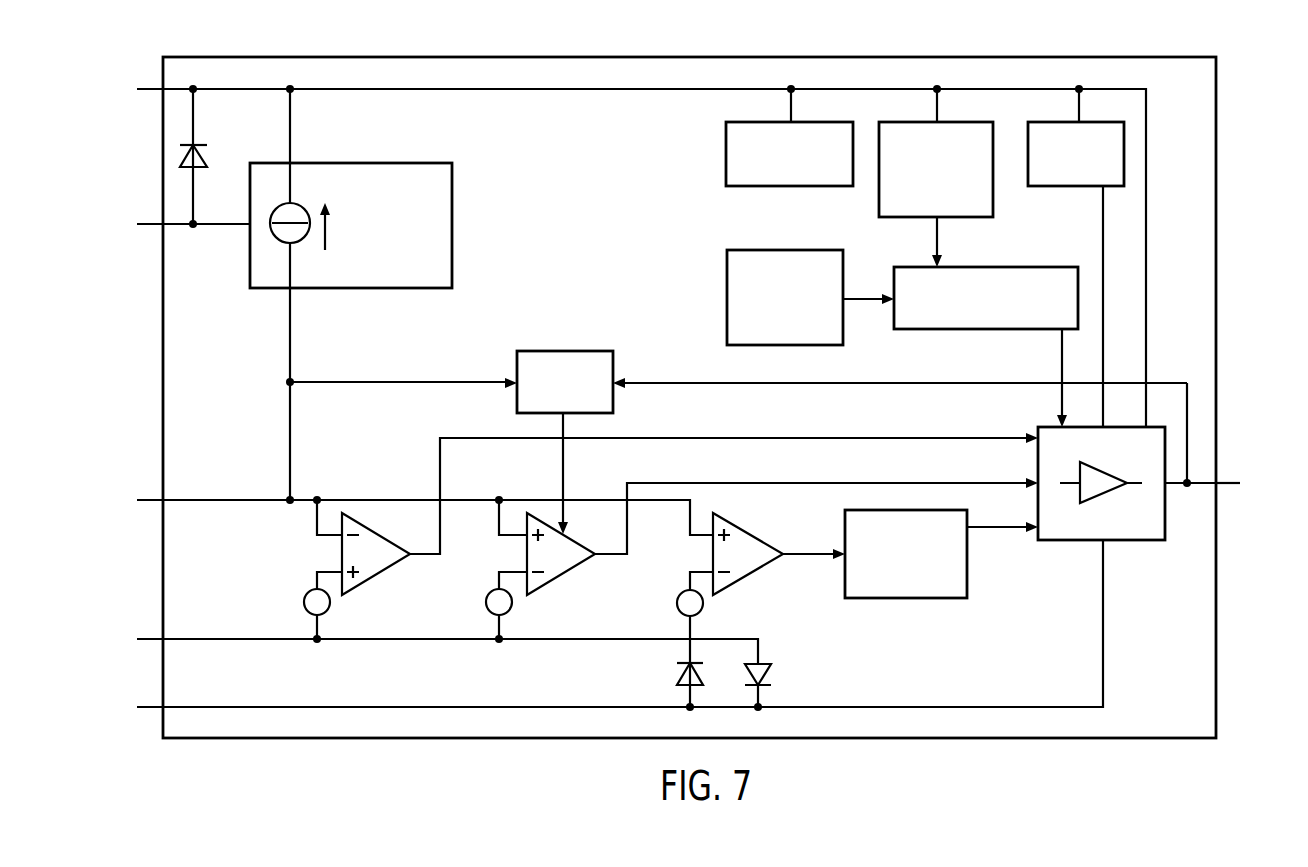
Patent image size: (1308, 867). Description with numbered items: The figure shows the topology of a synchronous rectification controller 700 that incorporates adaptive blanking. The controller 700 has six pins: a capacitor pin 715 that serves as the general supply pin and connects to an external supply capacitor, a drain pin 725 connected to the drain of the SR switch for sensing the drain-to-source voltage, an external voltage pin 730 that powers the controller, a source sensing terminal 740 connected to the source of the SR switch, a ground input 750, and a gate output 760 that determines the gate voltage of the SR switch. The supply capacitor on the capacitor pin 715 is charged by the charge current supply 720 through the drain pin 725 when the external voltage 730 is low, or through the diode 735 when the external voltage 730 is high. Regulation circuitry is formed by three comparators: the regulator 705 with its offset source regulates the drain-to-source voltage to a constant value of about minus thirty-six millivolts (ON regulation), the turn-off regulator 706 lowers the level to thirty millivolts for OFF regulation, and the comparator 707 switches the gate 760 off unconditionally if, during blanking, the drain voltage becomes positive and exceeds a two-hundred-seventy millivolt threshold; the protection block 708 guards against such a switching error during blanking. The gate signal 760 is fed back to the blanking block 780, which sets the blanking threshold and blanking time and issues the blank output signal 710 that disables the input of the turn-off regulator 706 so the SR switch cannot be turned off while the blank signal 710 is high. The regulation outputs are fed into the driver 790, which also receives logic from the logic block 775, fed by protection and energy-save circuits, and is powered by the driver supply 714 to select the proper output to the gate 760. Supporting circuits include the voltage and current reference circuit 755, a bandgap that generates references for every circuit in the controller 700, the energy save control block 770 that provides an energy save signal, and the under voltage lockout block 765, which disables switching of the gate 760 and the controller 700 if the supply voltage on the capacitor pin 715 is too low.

The controller 700 is at (1241, 95).
The regulator 705 is at (352, 590).
The turn-off regulator 706 is at (540, 590).
The comparator 707 is at (753, 530).
The protection block 708 is at (927, 598).
The output signal blank 710 is at (563, 462).
The driver supply 714 is at (1124, 155).
The capacitor pin 715 is at (150, 89).
The charge current supply 720 is at (452, 187).
The drain pin 725 is at (147, 500).
The external voltage pin 730 is at (147, 225).
The diode 735 is at (183, 160).
The source sensing terminal 740 is at (147, 639).
The ground input 750 is at (147, 708).
The voltage and current reference circuit 755 is at (726, 140).
The gate output 760 is at (1227, 487).
The under voltage lockout block 765 is at (879, 203).
The energy save control block 770 is at (727, 292).
The logic block 775 is at (1078, 298).
The blanking block 780 is at (736, 382).
The driver 790 is at (1165, 445).